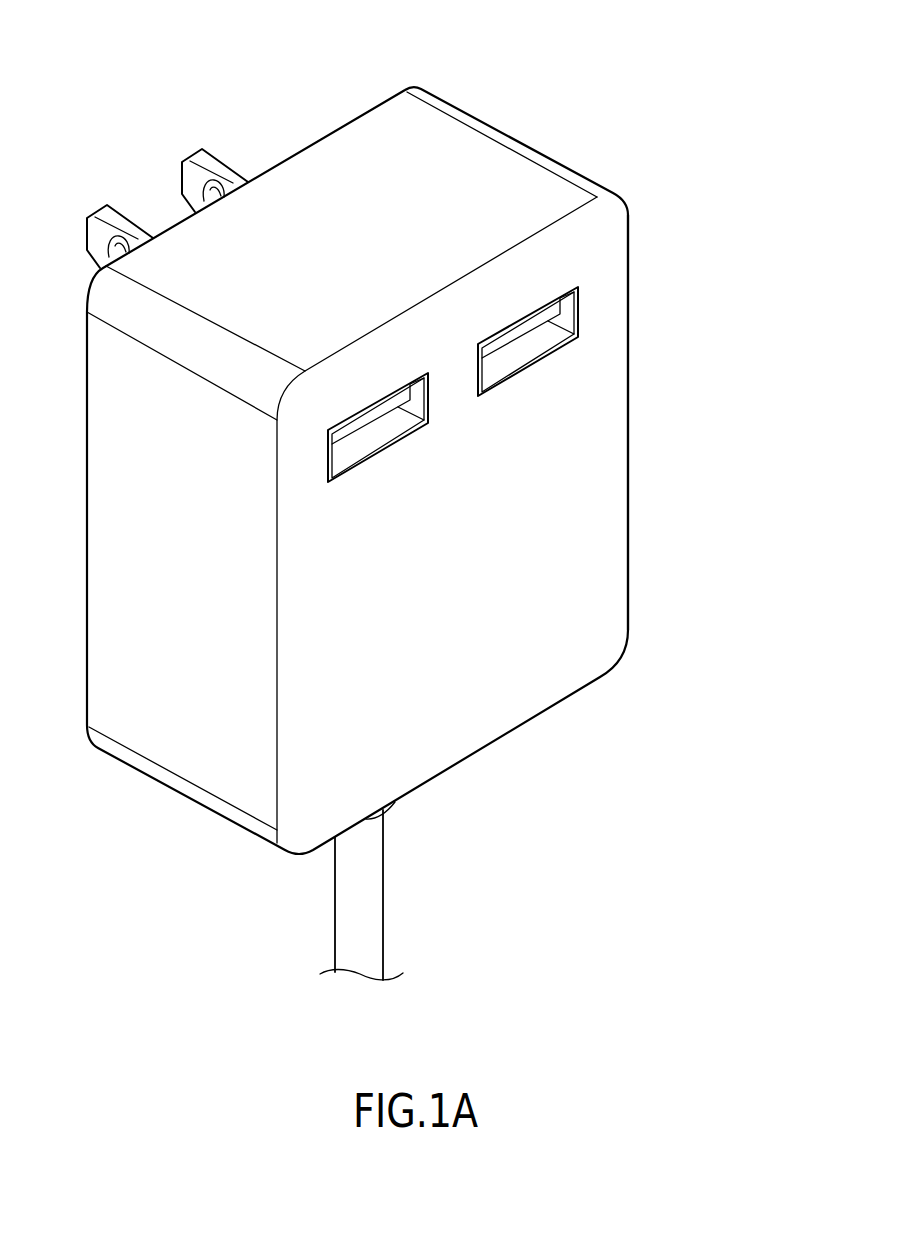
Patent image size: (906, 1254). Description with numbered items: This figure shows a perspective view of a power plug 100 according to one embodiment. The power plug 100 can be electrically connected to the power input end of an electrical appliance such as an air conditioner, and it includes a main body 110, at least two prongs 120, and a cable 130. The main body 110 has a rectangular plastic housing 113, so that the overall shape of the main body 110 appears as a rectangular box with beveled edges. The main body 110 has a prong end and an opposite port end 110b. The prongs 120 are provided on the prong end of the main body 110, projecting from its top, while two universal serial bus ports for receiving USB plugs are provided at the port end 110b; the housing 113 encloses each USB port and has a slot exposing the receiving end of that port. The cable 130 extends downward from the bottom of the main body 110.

The power plug 100 is at (307, 42).
The main body 110 is at (528, 128).
The port end 110b is at (588, 258).
The housing 113 is at (628, 497).
The prongs 120 is at (192, 180).
The cable 130 is at (383, 897).